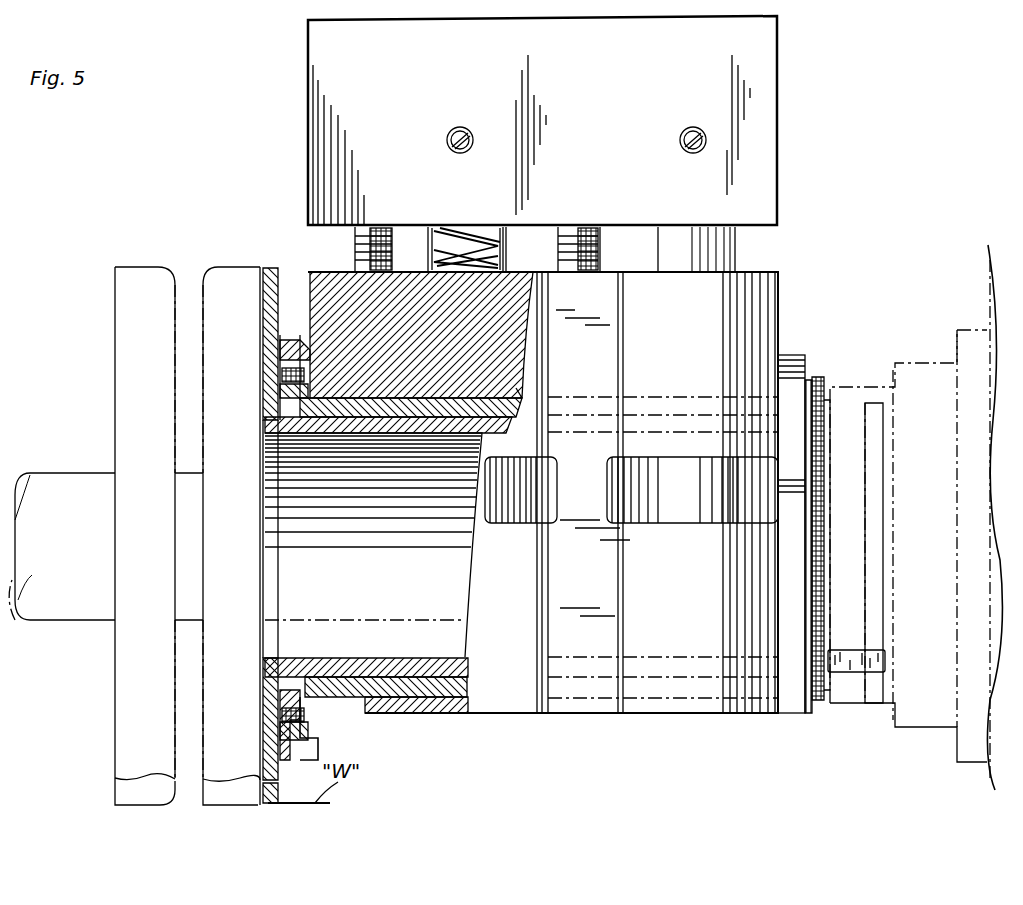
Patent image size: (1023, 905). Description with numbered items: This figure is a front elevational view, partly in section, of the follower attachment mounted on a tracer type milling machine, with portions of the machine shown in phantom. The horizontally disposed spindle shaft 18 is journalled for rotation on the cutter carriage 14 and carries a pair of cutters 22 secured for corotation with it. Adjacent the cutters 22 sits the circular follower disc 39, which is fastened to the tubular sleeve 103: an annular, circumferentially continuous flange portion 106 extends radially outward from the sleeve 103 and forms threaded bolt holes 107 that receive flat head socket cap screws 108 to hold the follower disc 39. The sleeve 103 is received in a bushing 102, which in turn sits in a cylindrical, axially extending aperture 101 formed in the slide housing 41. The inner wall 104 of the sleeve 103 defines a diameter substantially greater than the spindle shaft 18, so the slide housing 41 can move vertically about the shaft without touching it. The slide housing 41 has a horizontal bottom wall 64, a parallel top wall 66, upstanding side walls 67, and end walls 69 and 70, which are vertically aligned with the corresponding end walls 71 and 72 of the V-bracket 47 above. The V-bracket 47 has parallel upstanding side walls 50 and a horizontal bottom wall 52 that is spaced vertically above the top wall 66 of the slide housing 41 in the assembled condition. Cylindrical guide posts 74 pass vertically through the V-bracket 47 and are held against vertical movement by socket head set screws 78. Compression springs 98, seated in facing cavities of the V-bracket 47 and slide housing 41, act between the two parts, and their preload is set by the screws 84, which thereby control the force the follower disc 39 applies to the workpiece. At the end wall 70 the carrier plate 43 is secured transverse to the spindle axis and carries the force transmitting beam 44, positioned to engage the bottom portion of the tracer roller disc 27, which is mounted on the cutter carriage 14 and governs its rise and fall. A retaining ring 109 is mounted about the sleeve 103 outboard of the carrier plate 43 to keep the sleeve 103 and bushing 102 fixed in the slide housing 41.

The cutter carriage 14 is at (984, 328).
The spindle shaft 18 is at (75, 455).
The cutters 22 is at (205, 268).
The tracer roller disc 27 is at (884, 420).
The follower disc 39 is at (272, 268).
The slide housing 41 is at (780, 283).
The carrier plate 43 is at (795, 352).
The force transmitting beam 44 is at (855, 672).
The V-bracket 47 is at (777, 146).
The side walls 50 is at (632, 82).
The bottom wall 52 is at (777, 225).
The bottom wall 64 is at (768, 714).
The top wall 66 is at (338, 272).
The side walls 67 is at (595, 614).
The end wall 69 is at (310, 292).
The end wall 70 is at (780, 298).
The end wall 71 is at (308, 122).
The end wall 72 is at (777, 92).
The guide posts 74 is at (503, 245).
The socket head set screws 78 is at (462, 128).
The screws 84 is at (390, 245).
The compression springs 98 is at (457, 238).
The aperture 101 is at (520, 392).
The bushing 102 is at (512, 407).
The sleeve 103 is at (470, 443).
The inner wall 104 is at (395, 658).
The flange portion 106 is at (295, 352).
The threaded bolt holes 107 is at (288, 368).
The flat head socket cap screws 108 is at (280, 388).
The retaining ring 109 is at (818, 380).